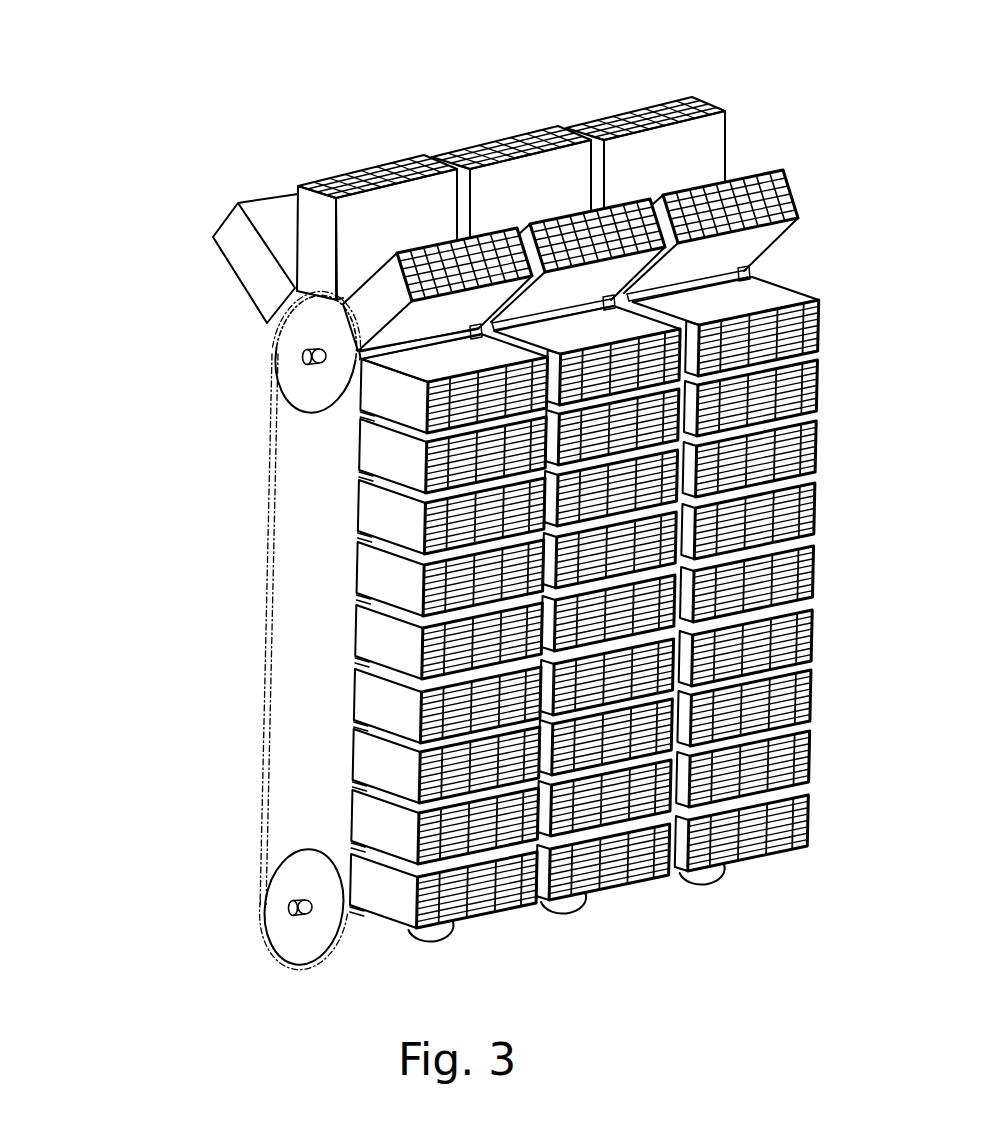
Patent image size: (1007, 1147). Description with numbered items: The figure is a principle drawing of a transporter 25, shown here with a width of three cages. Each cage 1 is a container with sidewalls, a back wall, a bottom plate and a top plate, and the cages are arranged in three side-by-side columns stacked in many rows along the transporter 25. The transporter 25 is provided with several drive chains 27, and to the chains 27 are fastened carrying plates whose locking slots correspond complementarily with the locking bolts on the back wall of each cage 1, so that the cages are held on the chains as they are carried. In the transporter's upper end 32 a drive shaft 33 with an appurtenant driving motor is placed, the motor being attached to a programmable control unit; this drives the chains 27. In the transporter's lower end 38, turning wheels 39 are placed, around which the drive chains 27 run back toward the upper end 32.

The cage 1 is at (728, 142).
The transporter 25 is at (331, 109).
The drive chains 27 is at (273, 490).
The upper end 32 is at (232, 340).
The drive shaft 33 is at (300, 366).
The lower end 38 is at (205, 913).
The turning wheels 39 is at (296, 943).